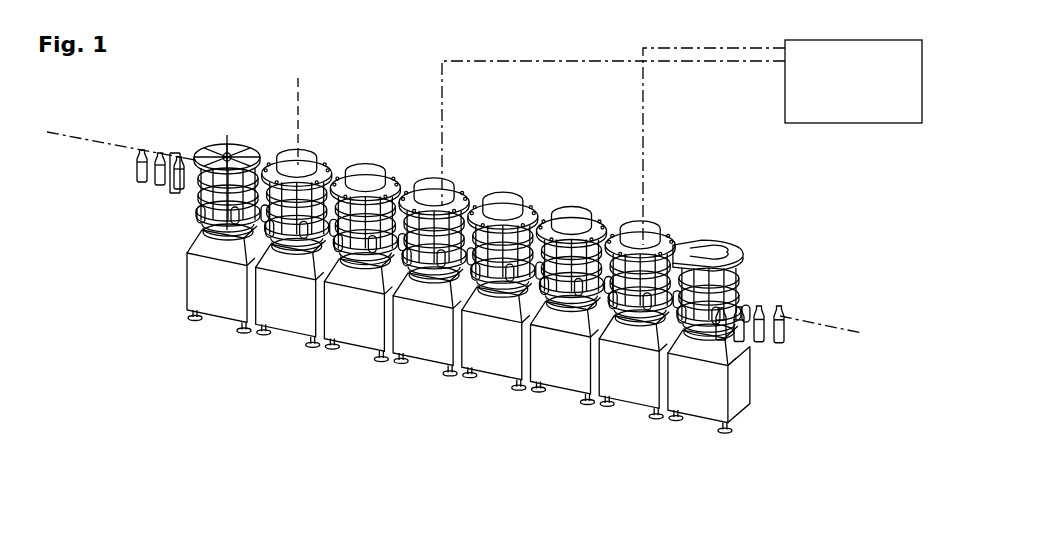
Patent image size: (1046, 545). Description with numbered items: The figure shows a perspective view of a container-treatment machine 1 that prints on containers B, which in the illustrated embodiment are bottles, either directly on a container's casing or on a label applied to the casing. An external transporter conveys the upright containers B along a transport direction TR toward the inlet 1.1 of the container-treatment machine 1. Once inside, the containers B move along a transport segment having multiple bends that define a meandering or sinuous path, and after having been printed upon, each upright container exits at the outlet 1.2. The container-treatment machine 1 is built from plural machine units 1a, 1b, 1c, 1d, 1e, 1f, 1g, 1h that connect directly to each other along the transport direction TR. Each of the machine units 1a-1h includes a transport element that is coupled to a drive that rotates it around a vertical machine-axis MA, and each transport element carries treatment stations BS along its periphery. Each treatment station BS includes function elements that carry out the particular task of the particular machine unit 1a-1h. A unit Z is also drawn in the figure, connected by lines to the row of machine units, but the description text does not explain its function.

The container-treatment machine 1 is at (676, 132).
The machine unit 1a is at (224, 122).
The machine unit 1b is at (311, 149).
The machine unit 1c is at (380, 154).
The machine unit 1d is at (448, 167).
The machine unit 1e is at (524, 181).
The machine unit 1f is at (590, 194).
The machine unit 1g is at (658, 207).
The machine unit 1h is at (729, 223).
The inlet 1.1 is at (137, 208).
The outlet 1.2 is at (775, 372).
The containers B is at (133, 172).
The treatment station BS is at (397, 368).
The machine axis MA is at (301, 111).
The transport direction TR is at (172, 118).
The central control unit Z is at (864, 95).